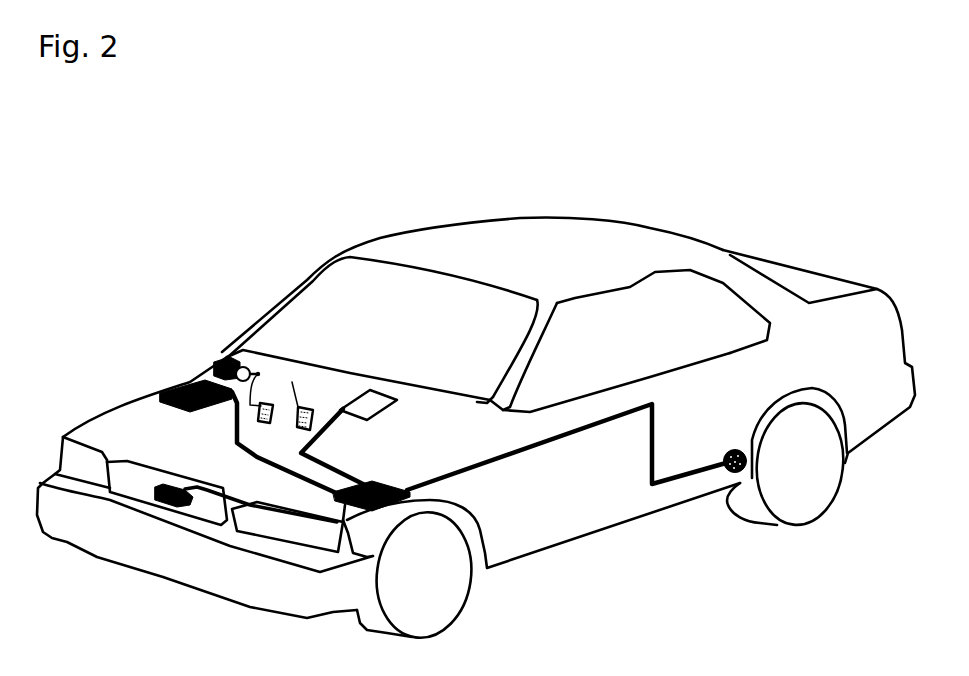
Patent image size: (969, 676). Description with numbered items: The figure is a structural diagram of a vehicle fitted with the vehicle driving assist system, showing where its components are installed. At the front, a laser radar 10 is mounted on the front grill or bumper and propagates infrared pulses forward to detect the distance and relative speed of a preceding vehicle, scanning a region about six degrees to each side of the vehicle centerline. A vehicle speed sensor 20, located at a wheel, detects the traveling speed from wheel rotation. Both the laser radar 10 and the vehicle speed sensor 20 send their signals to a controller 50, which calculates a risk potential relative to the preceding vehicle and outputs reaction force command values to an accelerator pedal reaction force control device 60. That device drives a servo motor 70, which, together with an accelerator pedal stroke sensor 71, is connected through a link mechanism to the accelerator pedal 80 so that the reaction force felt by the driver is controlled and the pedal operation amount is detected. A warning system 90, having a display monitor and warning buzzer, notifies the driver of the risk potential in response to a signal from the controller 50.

The laser radar 10 is at (172, 508).
The vehicle speed sensor 20 is at (733, 448).
The controller 50 is at (380, 509).
The accelerator pedal reaction force control device 60 is at (177, 383).
The servo motor 70 is at (206, 349).
The accelerator pedal stroke sensor 71 is at (240, 360).
The accelerator pedal 80 is at (263, 400).
The warning system 90 is at (373, 387).